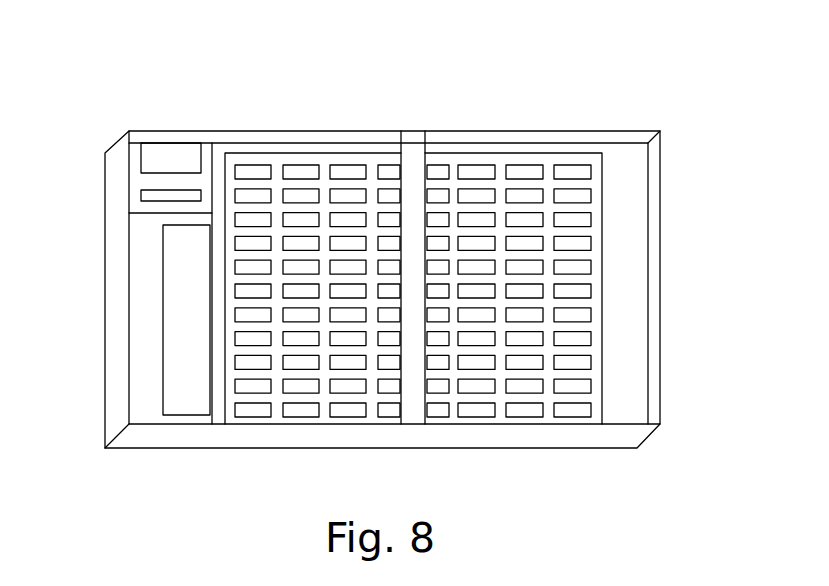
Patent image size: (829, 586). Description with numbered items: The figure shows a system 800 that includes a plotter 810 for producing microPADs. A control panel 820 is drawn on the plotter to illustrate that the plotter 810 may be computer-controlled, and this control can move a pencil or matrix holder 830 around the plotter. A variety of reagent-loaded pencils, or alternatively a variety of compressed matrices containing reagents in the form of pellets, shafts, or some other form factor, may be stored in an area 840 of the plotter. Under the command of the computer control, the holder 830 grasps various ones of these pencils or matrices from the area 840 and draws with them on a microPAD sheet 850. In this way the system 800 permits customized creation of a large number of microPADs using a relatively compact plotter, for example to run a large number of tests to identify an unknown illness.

The system 800 is at (636, 105).
The plotter 810 is at (115, 305).
The control panel 820 is at (173, 159).
The pencil or matrix holder 830 is at (403, 233).
The area 840 is at (202, 315).
The microPAD sheet 850 is at (518, 410).